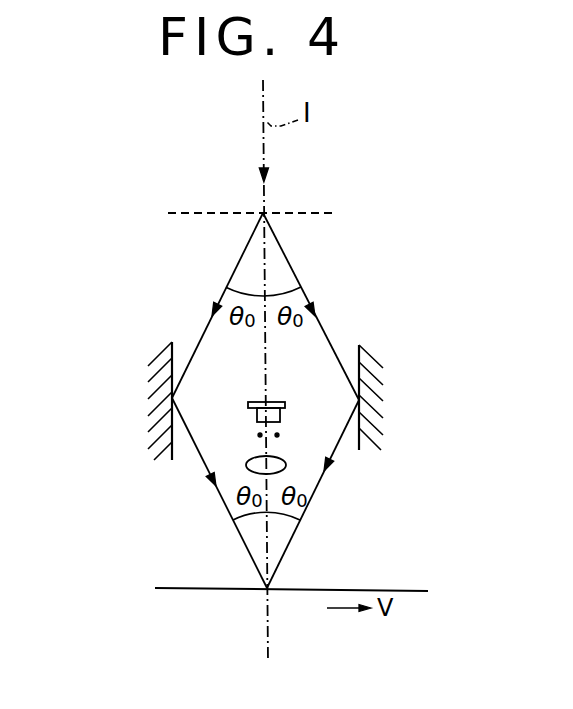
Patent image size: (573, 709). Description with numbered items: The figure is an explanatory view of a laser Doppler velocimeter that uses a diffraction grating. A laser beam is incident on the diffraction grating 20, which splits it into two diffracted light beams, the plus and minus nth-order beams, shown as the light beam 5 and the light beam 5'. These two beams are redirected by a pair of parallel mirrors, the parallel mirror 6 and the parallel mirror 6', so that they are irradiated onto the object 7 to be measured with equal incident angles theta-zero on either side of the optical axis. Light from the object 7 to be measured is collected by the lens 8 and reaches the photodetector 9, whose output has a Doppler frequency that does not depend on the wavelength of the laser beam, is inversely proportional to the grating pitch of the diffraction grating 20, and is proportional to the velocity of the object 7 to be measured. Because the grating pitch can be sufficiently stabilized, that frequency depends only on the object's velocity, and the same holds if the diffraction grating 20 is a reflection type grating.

The light beam 5 is at (217, 305).
The light beam 5' is at (311, 306).
The parallel mirror 6 is at (394, 372).
The parallel mirror 6' is at (139, 374).
The object to be measured 7 is at (170, 589).
The condensing lens 8 is at (247, 465).
The photodetector 9 is at (263, 399).
The diffraction grating 20 is at (340, 212).